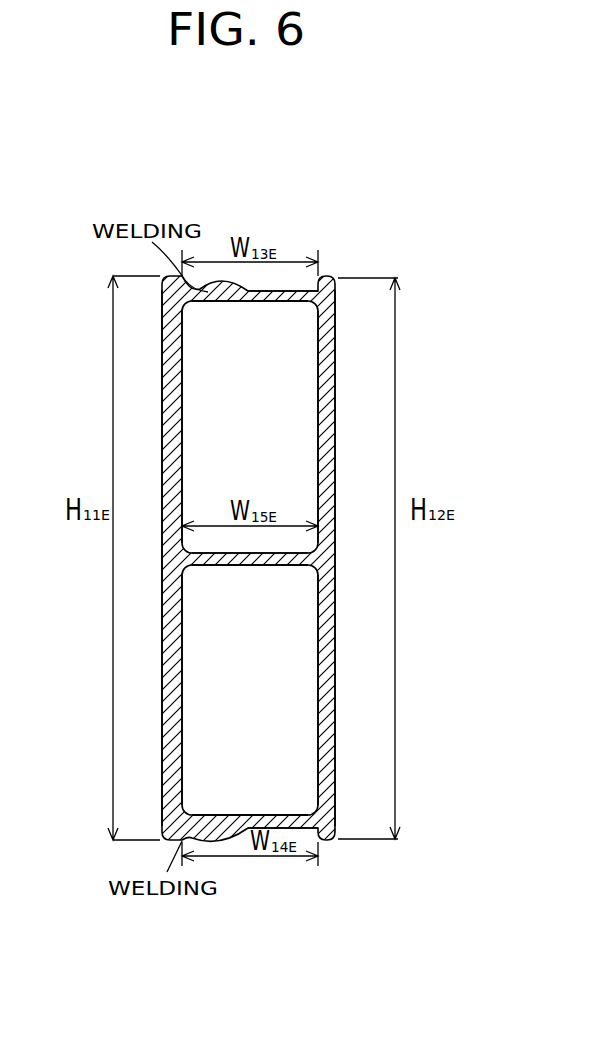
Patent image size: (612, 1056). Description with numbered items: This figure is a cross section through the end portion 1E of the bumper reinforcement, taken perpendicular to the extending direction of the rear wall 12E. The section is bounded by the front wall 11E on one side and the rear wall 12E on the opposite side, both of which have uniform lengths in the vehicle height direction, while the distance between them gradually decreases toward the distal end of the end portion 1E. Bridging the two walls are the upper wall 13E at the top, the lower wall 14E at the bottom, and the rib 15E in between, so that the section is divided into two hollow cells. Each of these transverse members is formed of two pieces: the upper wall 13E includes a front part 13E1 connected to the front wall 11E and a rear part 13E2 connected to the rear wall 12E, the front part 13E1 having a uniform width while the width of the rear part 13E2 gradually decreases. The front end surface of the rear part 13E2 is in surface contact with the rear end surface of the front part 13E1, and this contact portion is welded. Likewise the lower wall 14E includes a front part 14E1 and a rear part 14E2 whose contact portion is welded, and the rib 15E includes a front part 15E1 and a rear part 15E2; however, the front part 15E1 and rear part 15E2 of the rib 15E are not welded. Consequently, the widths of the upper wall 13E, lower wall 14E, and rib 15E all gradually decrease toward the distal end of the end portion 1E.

The end portion 1E is at (185, 477).
The front wall 11E is at (180, 449).
The rear wall 12E is at (318, 487).
The upper wall 13E is at (254, 355).
The front part 13E1 is at (217, 303).
The rear part 13E2 is at (292, 303).
The lower wall 14E is at (252, 757).
The front part 14E1 is at (218, 813).
The rear part 14E2 is at (290, 813).
The rib 15E is at (247, 618).
The front part 15E1 is at (217, 567).
The rear part 15E2 is at (292, 567).